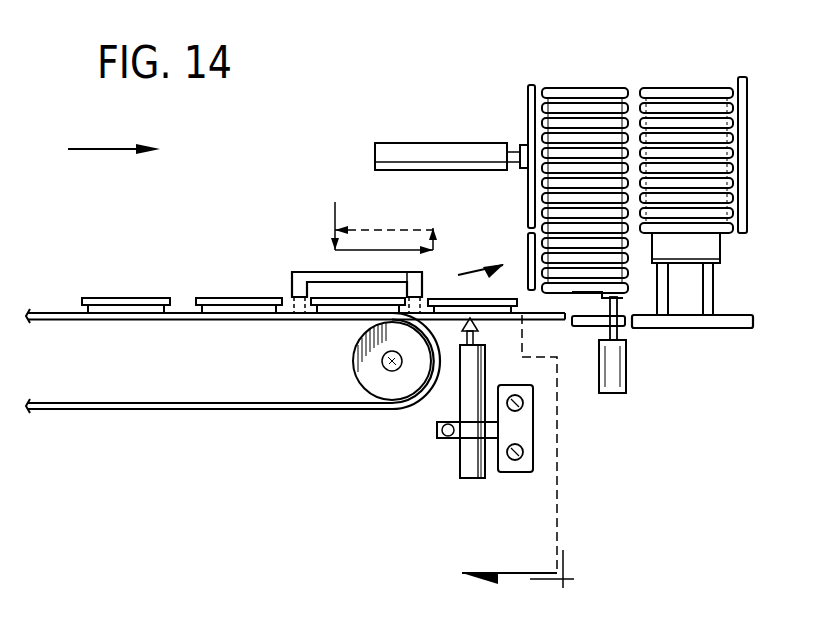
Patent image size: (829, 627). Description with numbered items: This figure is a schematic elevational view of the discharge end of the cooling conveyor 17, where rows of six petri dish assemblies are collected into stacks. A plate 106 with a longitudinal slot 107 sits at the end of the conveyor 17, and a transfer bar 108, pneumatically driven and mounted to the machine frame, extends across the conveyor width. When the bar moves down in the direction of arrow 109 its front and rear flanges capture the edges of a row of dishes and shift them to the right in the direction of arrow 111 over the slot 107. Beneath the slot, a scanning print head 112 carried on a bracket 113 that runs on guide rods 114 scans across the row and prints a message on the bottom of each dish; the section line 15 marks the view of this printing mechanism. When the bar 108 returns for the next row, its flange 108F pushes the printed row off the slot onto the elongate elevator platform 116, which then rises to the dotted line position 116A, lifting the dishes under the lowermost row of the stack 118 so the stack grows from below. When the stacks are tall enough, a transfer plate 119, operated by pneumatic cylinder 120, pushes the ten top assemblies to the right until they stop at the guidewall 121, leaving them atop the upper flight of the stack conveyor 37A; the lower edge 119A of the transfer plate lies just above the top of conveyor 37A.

The conveyor 17 is at (56, 313).
The plate 106 is at (438, 322).
The longitudinal slot 107 is at (501, 355).
The transfer bar 108 is at (292, 266).
The flange 108F is at (417, 272).
The arrow 109 is at (333, 213).
The arrow 111 is at (103, 149).
The scanning print head 112 is at (468, 465).
The bracket 113 is at (525, 437).
The guide rods 114 is at (521, 403).
The elevator platform 116 is at (625, 328).
The dotted line position 116A is at (623, 295).
The stack 118 is at (591, 82).
The transfer plate 119 is at (528, 103).
The lower edge 119A is at (521, 232).
The pneumatic cylinder 120 is at (430, 150).
The guidewall 121 is at (748, 150).
The stack conveyor 37A is at (682, 250).
The section line 15- 15 is at (516, 425).